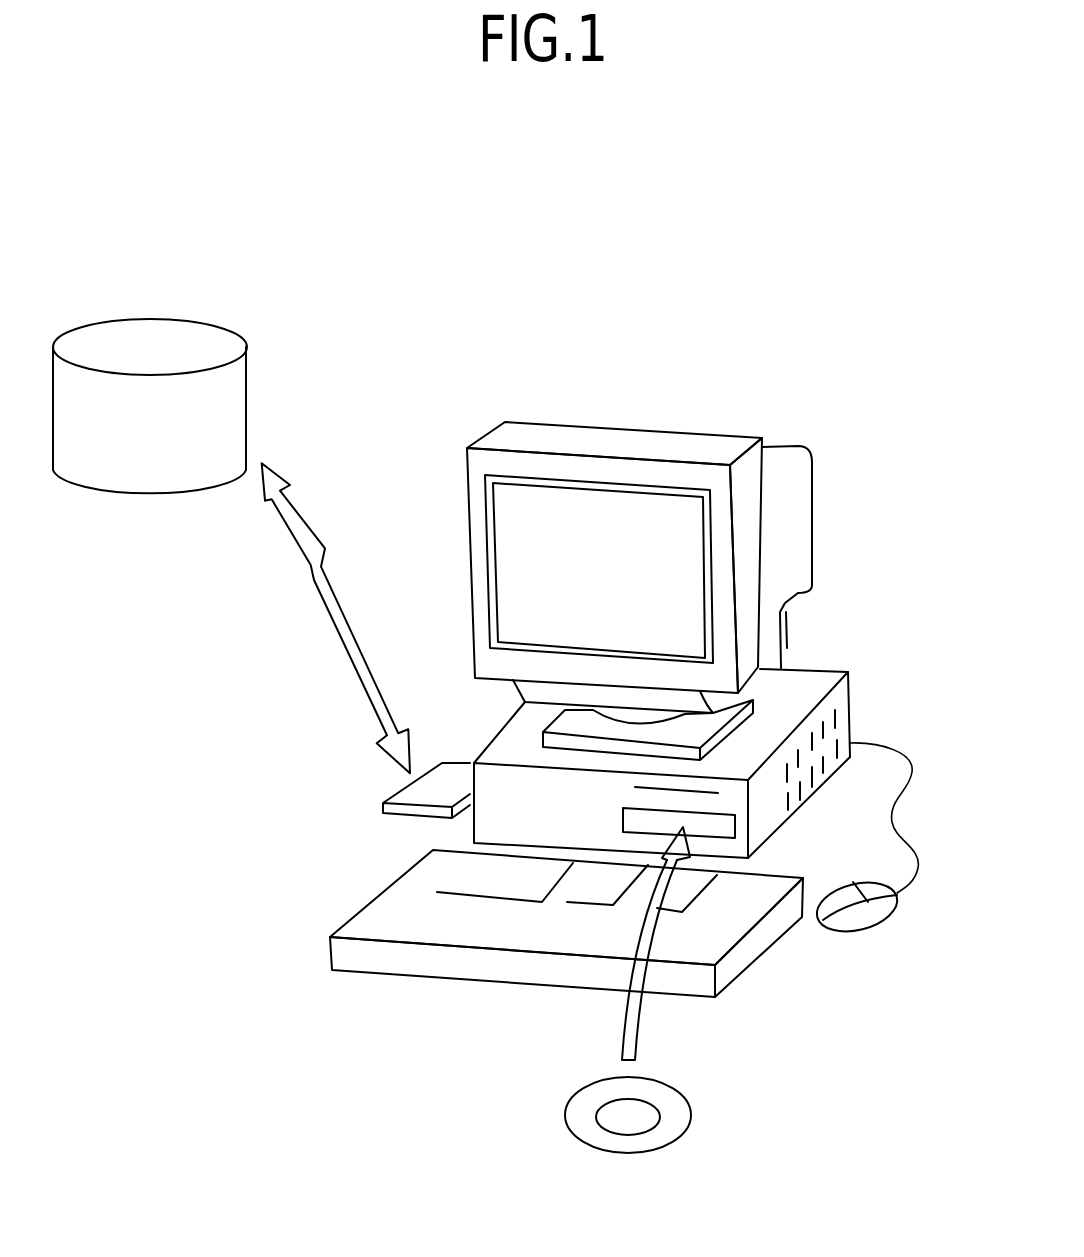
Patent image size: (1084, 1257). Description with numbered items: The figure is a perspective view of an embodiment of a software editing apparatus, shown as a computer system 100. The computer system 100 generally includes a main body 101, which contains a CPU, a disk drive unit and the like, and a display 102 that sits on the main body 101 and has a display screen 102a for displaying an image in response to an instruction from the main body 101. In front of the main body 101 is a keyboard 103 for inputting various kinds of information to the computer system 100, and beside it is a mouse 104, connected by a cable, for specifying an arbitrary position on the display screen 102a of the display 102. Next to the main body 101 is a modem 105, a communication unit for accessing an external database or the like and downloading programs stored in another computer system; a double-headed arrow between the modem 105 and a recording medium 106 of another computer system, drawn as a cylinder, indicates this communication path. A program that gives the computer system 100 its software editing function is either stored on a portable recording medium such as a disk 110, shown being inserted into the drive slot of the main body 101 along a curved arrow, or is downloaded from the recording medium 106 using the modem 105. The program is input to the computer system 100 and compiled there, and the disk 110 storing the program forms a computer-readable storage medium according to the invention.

The computer system 100 is at (782, 350).
The main body 101 is at (838, 667).
The display 102 is at (647, 548).
The display screen 102a is at (550, 507).
The keyboard 103 is at (387, 903).
The mouse 104 is at (858, 922).
The modem 105 is at (397, 790).
The recording medium 106 is at (213, 323).
The disk 110 is at (690, 1112).